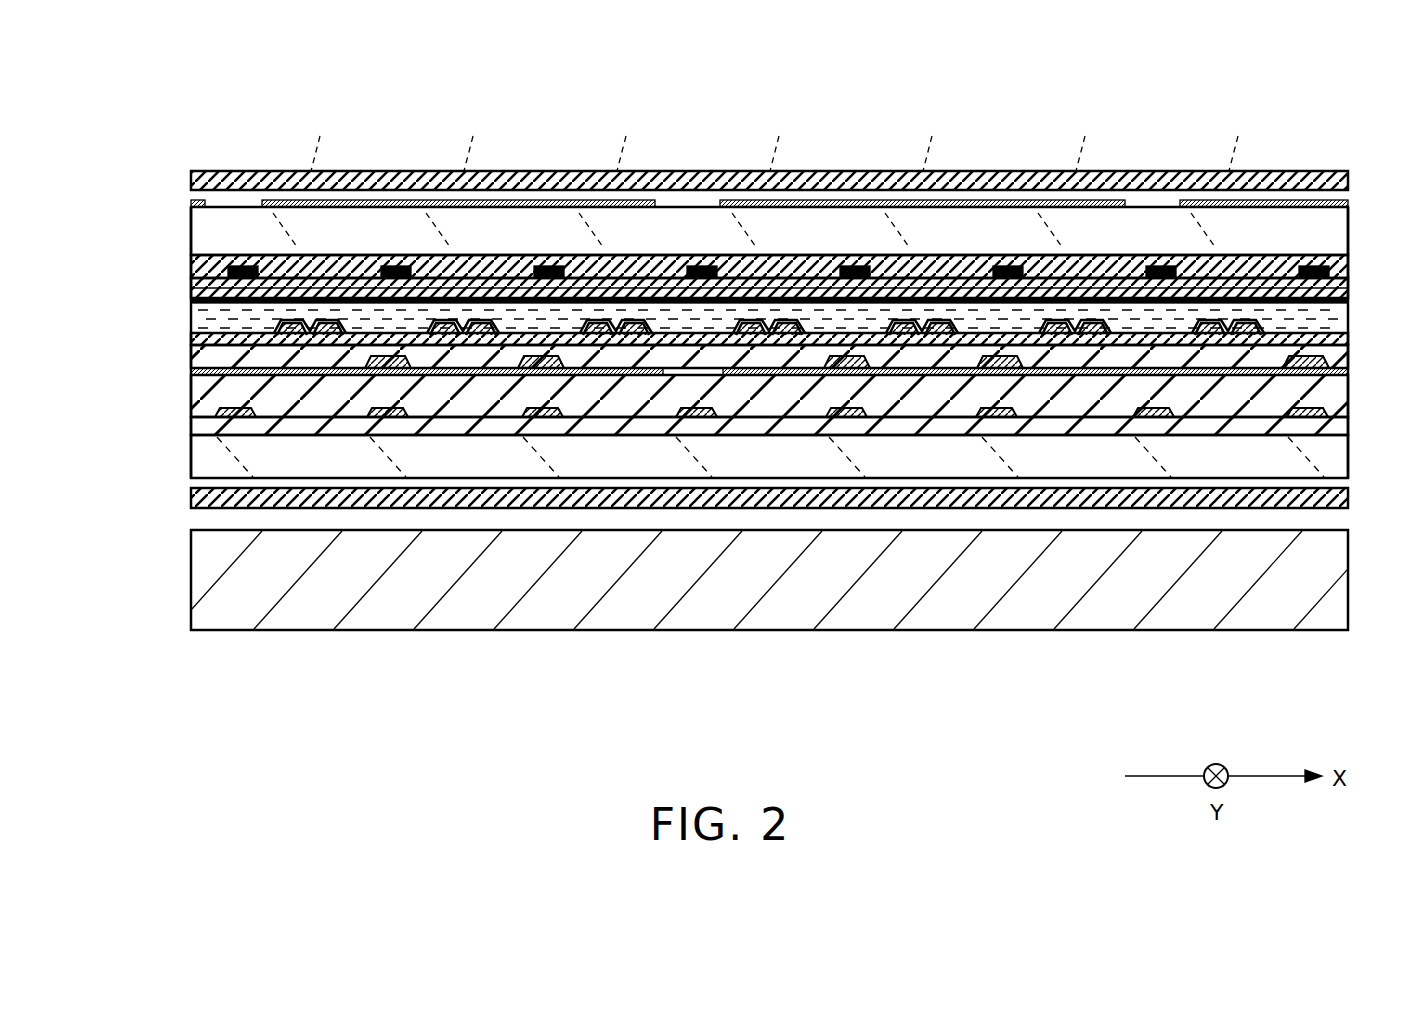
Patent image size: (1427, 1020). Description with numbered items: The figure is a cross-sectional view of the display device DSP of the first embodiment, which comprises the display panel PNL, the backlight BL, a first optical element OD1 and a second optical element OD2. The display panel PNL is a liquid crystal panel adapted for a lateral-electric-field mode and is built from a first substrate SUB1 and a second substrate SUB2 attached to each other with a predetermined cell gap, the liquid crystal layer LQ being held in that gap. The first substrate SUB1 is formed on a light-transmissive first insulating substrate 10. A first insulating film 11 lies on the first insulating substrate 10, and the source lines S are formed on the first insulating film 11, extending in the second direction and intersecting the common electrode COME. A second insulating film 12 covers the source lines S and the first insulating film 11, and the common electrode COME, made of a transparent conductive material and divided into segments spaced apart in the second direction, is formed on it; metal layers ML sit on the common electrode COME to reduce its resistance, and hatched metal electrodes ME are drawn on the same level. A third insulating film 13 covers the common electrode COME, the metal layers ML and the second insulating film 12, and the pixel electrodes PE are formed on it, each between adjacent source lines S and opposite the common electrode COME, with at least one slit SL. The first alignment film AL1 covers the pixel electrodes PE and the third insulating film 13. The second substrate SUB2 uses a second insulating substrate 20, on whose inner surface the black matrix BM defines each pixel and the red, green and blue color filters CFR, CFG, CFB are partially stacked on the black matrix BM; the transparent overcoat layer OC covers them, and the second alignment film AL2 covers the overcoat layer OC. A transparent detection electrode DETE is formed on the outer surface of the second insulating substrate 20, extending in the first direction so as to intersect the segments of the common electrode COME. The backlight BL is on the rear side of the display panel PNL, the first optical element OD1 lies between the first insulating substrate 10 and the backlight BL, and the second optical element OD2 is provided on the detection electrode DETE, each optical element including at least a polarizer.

The second optical element OD2 is at (1350, 183).
The detection electrode DETE is at (193, 202).
The second substrate SUB2 is at (184, 252).
The display panel PNL is at (1358, 251).
The color filter CFR is at (278, 260).
The color filter CFG is at (431, 260).
The color filter CFB is at (584, 260).
The black matrix BM is at (240, 266).
The slit SL is at (780, 142).
The overcoat layer OC is at (1350, 272).
The second alignment film AL2 is at (1350, 300).
The liquid crystal layer LQ is at (190, 318).
The pixel electrode PE is at (305, 323).
The first alignment film AL1 is at (1350, 331).
The third insulating film 13 is at (1350, 360).
The metal layer ML is at (385, 370).
The metal electrode ME is at (845, 370).
The common electrode COME is at (290, 376).
The second insulating film 12 is at (1350, 397).
The source line S is at (235, 420).
The first insulating film 11 is at (1350, 427).
The first insulating substrate 10 is at (1350, 462).
The first substrate SUB1 is at (184, 406).
The first optical element OD1 is at (1350, 497).
The backlight BL is at (1098, 625).
The display device DSP is at (1308, 145).
The second insulating substrate 20 is at (1348, 169).